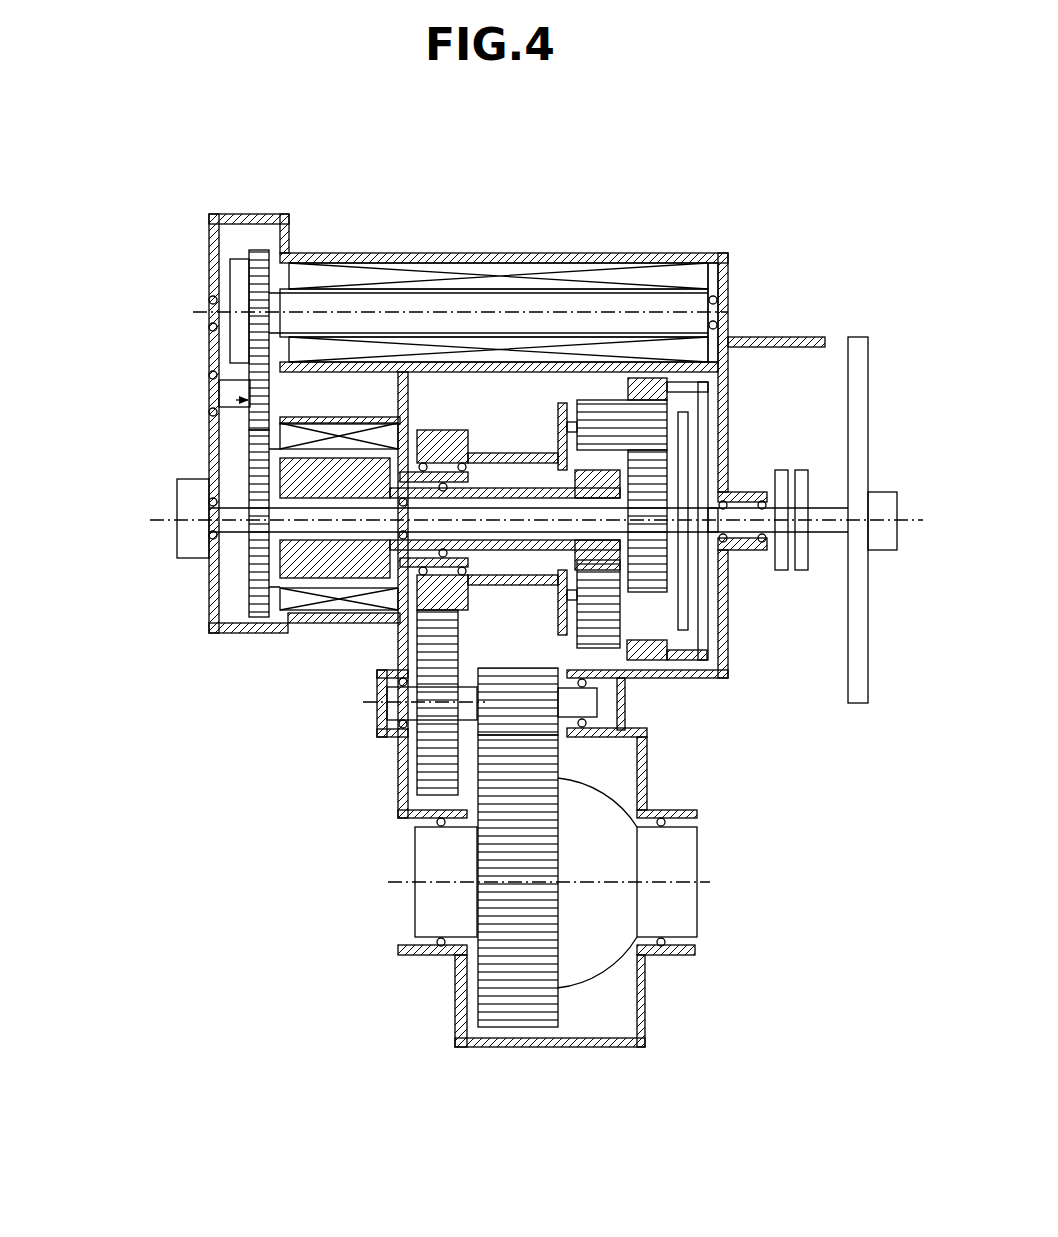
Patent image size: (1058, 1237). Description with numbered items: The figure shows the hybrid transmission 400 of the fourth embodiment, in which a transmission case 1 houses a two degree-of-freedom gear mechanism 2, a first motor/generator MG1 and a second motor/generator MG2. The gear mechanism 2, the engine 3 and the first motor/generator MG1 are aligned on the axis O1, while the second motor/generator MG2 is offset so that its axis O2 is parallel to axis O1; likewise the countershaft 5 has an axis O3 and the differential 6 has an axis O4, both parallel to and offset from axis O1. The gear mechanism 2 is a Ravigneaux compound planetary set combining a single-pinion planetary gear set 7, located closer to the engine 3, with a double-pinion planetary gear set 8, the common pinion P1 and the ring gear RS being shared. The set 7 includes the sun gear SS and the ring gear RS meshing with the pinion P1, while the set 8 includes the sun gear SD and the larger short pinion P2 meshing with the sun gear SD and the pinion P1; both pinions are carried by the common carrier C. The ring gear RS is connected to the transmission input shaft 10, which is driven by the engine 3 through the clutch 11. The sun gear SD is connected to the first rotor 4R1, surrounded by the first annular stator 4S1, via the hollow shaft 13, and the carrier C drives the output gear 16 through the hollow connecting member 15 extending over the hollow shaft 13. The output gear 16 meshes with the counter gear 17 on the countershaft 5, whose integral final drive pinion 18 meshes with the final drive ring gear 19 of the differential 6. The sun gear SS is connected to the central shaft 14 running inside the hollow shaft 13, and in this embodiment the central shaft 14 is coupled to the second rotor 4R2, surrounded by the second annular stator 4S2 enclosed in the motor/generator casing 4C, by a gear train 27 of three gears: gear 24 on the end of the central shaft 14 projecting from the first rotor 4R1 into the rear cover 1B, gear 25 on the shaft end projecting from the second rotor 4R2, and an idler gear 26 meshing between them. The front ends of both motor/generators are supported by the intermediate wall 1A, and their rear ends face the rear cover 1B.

The hybrid transmission 400 is at (571, 222).
The transmission case 1 is at (518, 356).
The intermediate wall 1A is at (398, 385).
The rear cover 1B is at (209, 338).
The two degree-of-freedom gear mechanism 2 is at (647, 419).
The engine 3 is at (883, 548).
The motor/generator casing 4C is at (425, 253).
The countershaft 5 is at (600, 693).
The differential 6 is at (612, 790).
The single-pinion planetary gear set 7 is at (631, 437).
The double-pinion planetary gear set 8 is at (681, 403).
The transmission input shaft 10 is at (742, 512).
The clutch 11 is at (795, 468).
The hollow shaft 13 is at (537, 488).
The central shaft 14 is at (494, 515).
The hollow connecting member 15 is at (480, 453).
The output gear 16 is at (443, 430).
The counter gear 17 is at (428, 635).
The final drive pinion 18 is at (543, 712).
The final drive ring gear 19 is at (543, 770).
The gear 24 is at (250, 442).
The gear 25 is at (260, 247).
The idler gear 26 is at (253, 377).
The gear train 27 is at (236, 400).
The first motor/generator MG1 is at (226, 511).
The second motor/generator MG2 is at (386, 290).
The first annular stator 4S1 is at (290, 437).
The first rotor 4R1 is at (290, 480).
The second annular stator 4S2 is at (293, 275).
The second rotor 4R2 is at (290, 298).
The ring gear RS is at (660, 385).
The common pinion P1 is at (657, 412).
The short pinion P2 is at (585, 638).
The sun gear SS is at (657, 473).
The sun gear SD is at (572, 580).
The common carrier C is at (683, 593).
The axis O1 is at (908, 520).
The axis O2 is at (735, 312).
The axis O3 is at (372, 702).
The axis O4 is at (398, 882).